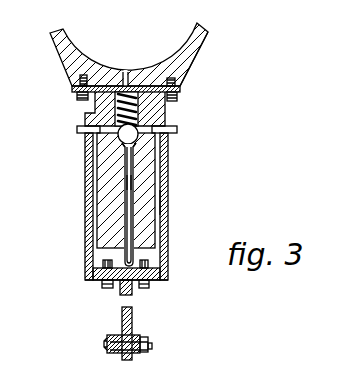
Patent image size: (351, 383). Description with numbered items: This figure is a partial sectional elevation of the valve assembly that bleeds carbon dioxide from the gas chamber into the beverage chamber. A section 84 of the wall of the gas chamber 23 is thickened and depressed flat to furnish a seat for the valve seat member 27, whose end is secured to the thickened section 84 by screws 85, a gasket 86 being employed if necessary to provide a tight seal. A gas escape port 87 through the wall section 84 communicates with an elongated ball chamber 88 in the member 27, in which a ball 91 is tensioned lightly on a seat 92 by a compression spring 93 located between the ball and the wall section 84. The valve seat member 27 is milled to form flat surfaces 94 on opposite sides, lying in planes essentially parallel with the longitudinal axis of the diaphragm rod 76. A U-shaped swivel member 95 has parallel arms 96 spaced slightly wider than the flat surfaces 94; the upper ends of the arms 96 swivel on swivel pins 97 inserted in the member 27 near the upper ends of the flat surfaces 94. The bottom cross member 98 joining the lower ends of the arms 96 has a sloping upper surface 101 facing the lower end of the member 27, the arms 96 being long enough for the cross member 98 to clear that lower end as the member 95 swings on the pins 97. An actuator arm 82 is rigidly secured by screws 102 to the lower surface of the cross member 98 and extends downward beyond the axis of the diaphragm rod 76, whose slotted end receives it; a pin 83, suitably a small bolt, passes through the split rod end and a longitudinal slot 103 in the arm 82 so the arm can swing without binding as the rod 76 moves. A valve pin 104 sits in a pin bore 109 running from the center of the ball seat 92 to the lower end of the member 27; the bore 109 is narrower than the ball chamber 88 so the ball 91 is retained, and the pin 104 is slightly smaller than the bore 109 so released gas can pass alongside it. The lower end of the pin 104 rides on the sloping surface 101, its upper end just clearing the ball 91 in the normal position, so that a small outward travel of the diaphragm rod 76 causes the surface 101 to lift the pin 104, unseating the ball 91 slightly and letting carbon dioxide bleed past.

The gas chamber 23 is at (88, 42).
The thickened wall section 84 is at (193, 58).
The gas escape port 87 is at (125, 72).
The gasket 86 is at (180, 88).
The screws 85 is at (177, 95).
The ball chamber 88 is at (163, 118).
The swivel pins 97 is at (80, 128).
The compression spring 93 is at (118, 100).
The valve seat member 27 is at (150, 160).
The ball 91 is at (118, 143).
The valve pin 104 is at (124, 209).
The ball seat 92 is at (118, 148).
The pin bore 109 is at (130, 183).
The flat surfaces 94 is at (160, 218).
The parallel arms 96 is at (165, 202).
The U-shaped swivel member 95 is at (183, 236).
The bottom cross member 98 is at (166, 276).
The sloping upper surface 101 is at (151, 263).
The screws 102 is at (103, 285).
The actuator arm 82 is at (133, 313).
The diaphragm rod 76 is at (133, 334).
The longitudinal slot 103 is at (123, 337).
The pin 83 is at (152, 345).